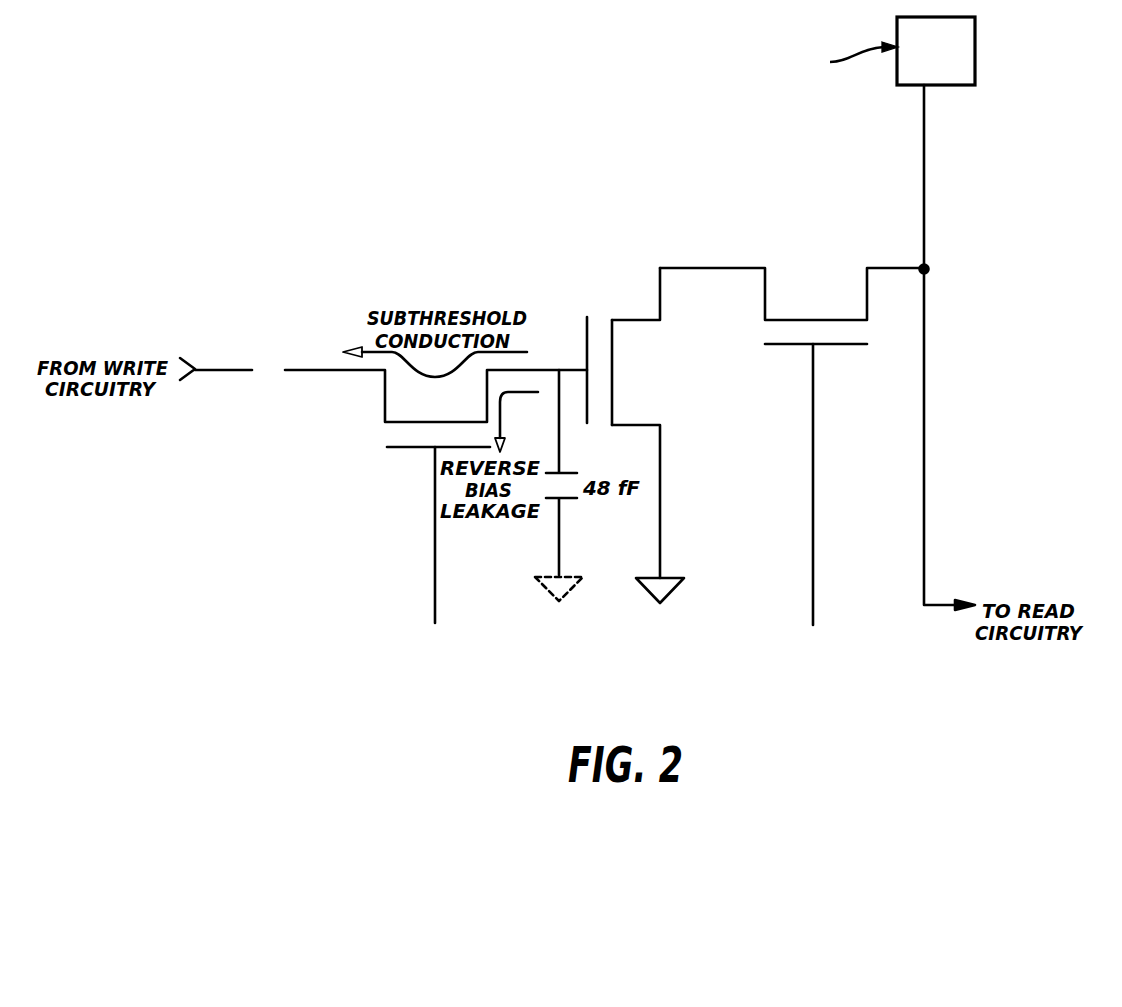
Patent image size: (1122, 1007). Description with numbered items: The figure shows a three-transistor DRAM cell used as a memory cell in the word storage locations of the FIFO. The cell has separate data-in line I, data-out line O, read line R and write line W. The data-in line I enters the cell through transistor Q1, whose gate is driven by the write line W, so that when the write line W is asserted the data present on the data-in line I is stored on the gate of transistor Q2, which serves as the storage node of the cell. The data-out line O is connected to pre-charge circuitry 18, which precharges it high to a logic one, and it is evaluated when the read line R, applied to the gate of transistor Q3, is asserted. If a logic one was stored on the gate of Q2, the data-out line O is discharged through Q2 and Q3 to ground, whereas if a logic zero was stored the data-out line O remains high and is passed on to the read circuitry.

The pre-charge circuitry 18 is at (975, 35).
The data-out line O is at (930, 272).
The data-in line I is at (425, 390).
The write line W is at (435, 550).
The read line R is at (812, 500).
The transistor Q1 is at (419, 473).
The transistor Q2 is at (664, 435).
The transistor Q3 is at (792, 293).